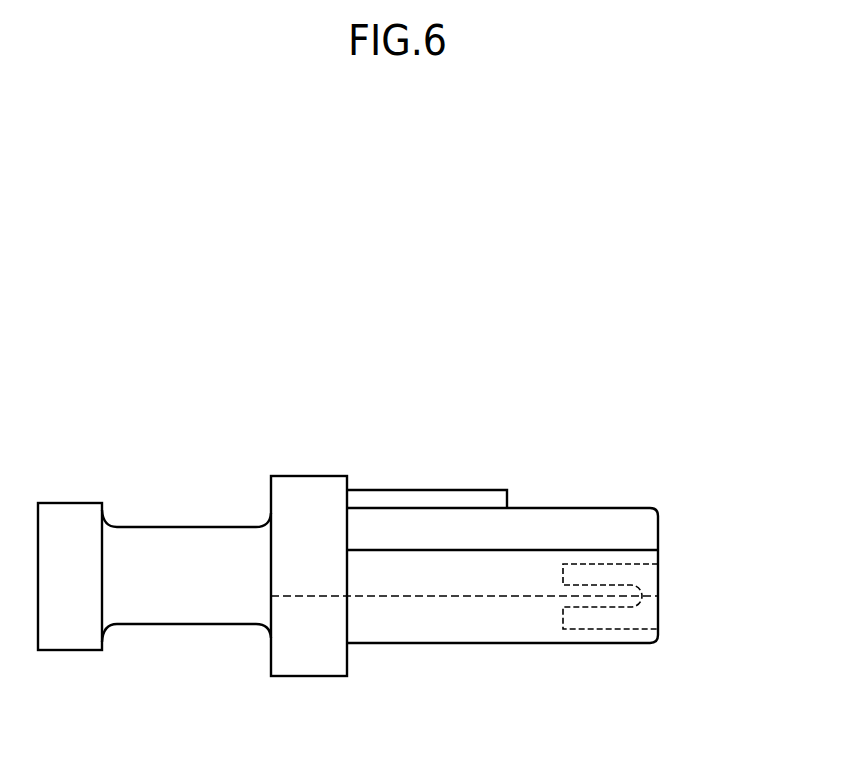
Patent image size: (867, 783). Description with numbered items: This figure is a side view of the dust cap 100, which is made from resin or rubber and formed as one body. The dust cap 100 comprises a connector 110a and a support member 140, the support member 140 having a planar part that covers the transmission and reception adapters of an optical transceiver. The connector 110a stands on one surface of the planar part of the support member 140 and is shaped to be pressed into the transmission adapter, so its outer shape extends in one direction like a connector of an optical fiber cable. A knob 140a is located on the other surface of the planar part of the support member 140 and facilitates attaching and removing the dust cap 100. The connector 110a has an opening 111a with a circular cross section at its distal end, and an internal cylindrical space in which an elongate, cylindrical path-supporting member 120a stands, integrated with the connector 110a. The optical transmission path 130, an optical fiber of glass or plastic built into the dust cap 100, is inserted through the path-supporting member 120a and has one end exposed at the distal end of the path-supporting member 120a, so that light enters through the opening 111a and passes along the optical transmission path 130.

The dust cap 100 is at (659, 403).
The connector 110a is at (413, 500).
The opening 111a is at (683, 578).
The path-supporting member 120a is at (593, 585).
The optical transmission path 130 is at (310, 592).
The support member 140 is at (305, 482).
The knob 140a is at (182, 608).